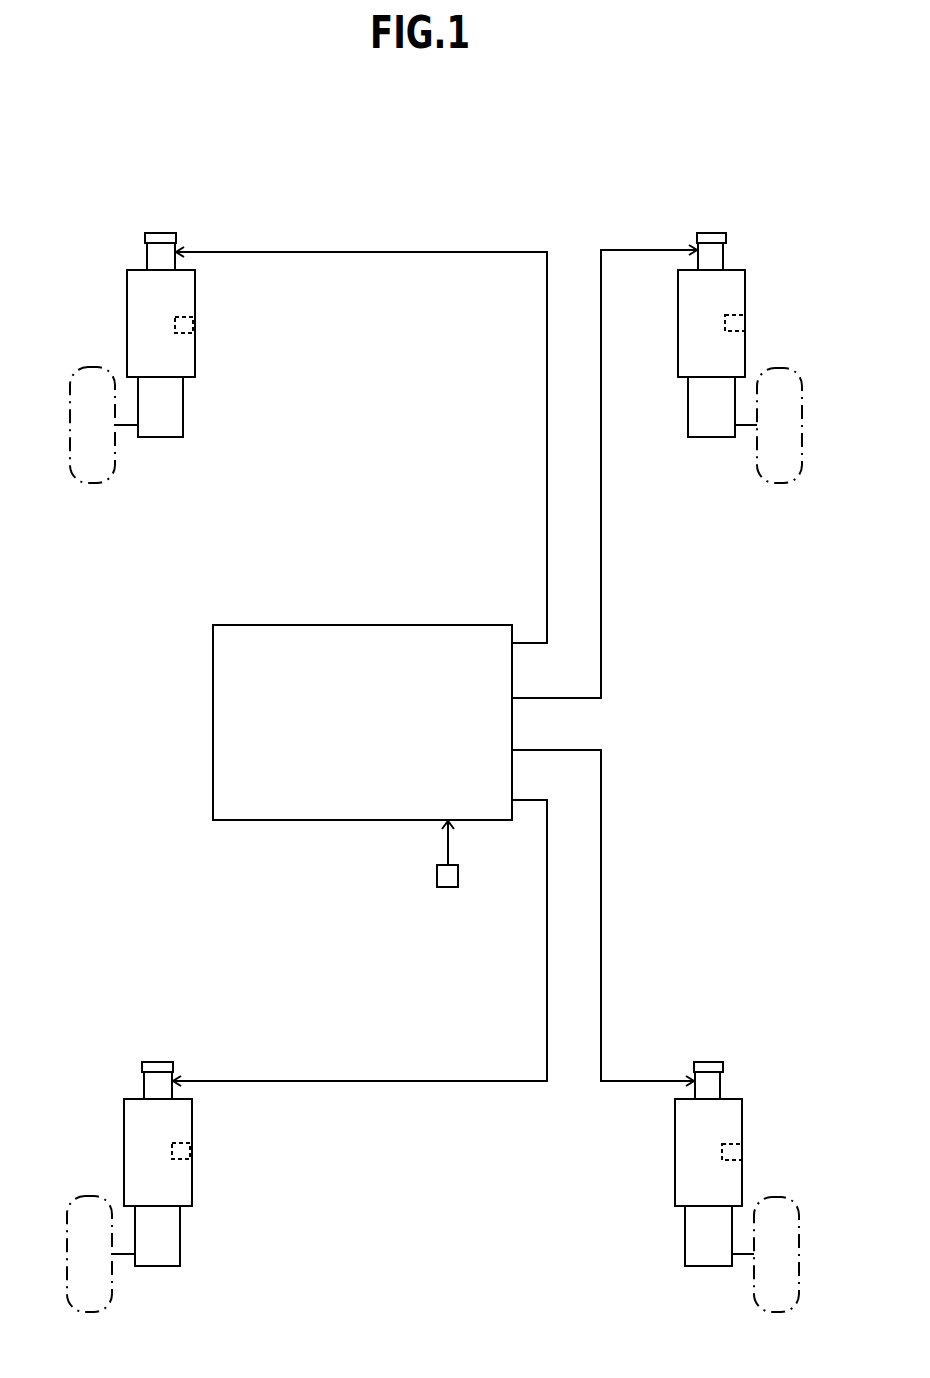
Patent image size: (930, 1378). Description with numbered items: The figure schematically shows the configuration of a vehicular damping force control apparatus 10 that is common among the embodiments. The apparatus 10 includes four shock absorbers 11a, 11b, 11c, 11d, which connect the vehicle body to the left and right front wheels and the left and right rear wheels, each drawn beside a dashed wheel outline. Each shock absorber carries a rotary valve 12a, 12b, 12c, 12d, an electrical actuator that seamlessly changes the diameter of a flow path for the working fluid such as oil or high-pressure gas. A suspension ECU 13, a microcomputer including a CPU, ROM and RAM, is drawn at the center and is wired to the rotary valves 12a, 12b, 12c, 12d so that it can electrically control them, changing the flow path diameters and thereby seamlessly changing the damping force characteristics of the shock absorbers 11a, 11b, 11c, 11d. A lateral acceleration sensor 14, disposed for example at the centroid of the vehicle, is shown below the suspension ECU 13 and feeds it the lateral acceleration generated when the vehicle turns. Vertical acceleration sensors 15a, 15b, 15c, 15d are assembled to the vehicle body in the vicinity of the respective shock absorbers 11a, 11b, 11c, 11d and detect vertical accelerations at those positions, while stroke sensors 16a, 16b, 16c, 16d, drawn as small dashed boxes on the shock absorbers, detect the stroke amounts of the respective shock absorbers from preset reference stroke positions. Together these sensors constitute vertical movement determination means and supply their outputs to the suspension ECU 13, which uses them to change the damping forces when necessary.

The vehicular damping force control apparatus 10 is at (200, 152).
The shock absorber 11a is at (195, 297).
The shock absorber 11b is at (745, 297).
The shock absorber 11c is at (192, 1122).
The shock absorber 11d is at (742, 1120).
The rotary valve 12a is at (147, 258).
The rotary valve 12b is at (723, 262).
The rotary valve 12c is at (144, 1086).
The rotary valve 12d is at (720, 1088).
The suspension electric control unit 13 is at (292, 625).
The lateral acceleration sensor 14 is at (437, 877).
The vertical acceleration sensor 15a is at (162, 233).
The vertical acceleration sensor 15b is at (712, 233).
The vertical acceleration sensor 15c is at (160, 1062).
The vertical acceleration sensor 15d is at (709, 1062).
The stroke sensor 16a is at (193, 324).
The stroke sensor 16b is at (745, 322).
The stroke sensor 16c is at (190, 1150).
The stroke sensor 16d is at (742, 1150).